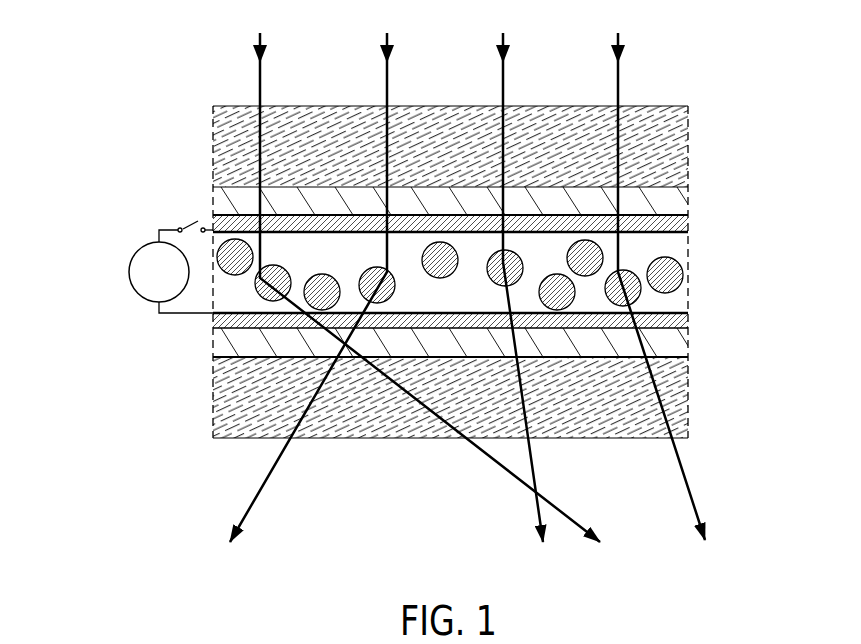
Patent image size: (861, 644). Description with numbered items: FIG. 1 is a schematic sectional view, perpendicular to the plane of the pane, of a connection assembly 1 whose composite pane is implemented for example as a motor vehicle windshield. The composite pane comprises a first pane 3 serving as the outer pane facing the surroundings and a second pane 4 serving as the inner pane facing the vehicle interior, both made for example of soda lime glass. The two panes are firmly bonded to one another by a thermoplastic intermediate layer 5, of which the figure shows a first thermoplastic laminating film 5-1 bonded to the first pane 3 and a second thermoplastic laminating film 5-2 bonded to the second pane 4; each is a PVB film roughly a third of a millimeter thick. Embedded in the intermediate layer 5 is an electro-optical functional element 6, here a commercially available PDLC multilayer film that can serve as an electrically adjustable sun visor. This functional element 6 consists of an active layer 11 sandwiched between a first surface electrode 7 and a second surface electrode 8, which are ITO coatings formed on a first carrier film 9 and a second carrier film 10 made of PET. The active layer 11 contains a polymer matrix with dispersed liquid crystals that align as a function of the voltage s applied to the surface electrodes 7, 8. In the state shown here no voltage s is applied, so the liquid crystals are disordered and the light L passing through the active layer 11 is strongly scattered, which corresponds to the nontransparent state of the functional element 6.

The connection assembly 1 is at (130, 115).
The first pane 3 is at (690, 148).
The second pane 4 is at (690, 398).
The thermoplastic intermediate layer 5 is at (507, 272).
The first thermoplastic laminating film 5-1 is at (690, 200).
The second thermoplastic laminating film 5-2 is at (690, 343).
The electro-optical functional element 6 is at (152, 308).
The first surface electrode 7 is at (690, 231).
The second surface electrode 8 is at (690, 313).
The first carrier film 9 is at (690, 225).
The second carrier film 10 is at (690, 322).
The active layer 11 is at (690, 273).
The voltage s is at (191, 212).
The light L is at (260, 88).